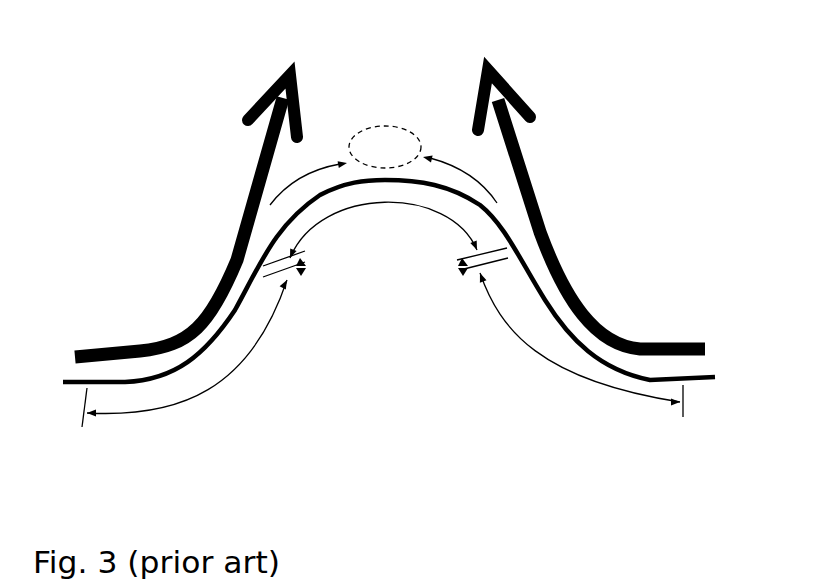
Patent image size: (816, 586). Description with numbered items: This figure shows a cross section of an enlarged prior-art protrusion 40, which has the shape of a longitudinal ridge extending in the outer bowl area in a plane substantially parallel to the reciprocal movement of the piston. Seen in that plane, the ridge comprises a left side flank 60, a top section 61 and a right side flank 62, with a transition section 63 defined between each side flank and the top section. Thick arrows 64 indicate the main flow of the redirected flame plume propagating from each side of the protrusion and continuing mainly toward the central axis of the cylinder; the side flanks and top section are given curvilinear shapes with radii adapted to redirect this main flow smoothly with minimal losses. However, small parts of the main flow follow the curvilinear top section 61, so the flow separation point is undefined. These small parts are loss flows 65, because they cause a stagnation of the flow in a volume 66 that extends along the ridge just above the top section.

The protrusion 40 is at (616, 94).
The left side flank 60 is at (184, 353).
The top section 61 is at (383, 230).
The right side flank 62 is at (581, 345).
The transition section 63 is at (463, 270).
The main flow 64 is at (242, 213).
The loss flows 65 is at (330, 160).
The volume 66 is at (390, 127).